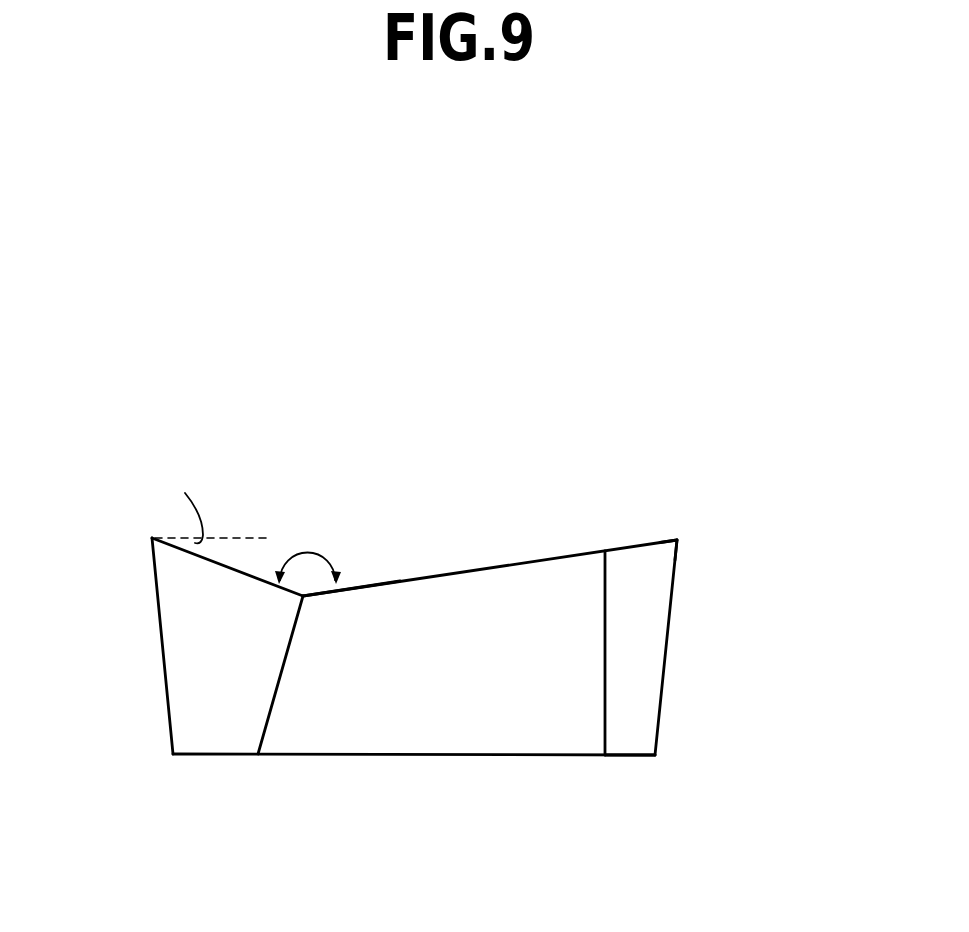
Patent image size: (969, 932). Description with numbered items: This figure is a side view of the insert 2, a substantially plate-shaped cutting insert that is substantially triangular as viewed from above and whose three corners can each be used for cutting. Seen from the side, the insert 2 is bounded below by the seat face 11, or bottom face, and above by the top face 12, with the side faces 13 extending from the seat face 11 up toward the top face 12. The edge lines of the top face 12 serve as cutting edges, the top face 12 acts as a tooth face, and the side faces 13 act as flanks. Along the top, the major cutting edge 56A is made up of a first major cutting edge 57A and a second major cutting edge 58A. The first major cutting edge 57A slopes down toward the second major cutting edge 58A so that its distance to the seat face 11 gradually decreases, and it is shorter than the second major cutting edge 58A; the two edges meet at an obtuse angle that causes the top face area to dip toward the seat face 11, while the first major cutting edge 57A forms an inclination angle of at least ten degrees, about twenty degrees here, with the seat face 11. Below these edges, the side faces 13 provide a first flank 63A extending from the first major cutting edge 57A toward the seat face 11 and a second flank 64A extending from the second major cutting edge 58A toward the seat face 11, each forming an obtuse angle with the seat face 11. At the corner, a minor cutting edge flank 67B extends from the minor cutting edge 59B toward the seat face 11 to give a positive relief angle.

The insert 2 is at (693, 436).
The seat face 11 is at (463, 755).
The top face 12 is at (393, 580).
The side faces 13 is at (163, 655).
The major cutting edge 56A is at (368, 388).
The first major cutting edge 57A is at (227, 566).
The second major cutting edge 58A is at (359, 585).
The minor cutting edge 59B is at (638, 540).
The first flank 63A is at (217, 722).
The second flank 64A is at (537, 722).
The minor cutting edge flank 67B is at (640, 722).